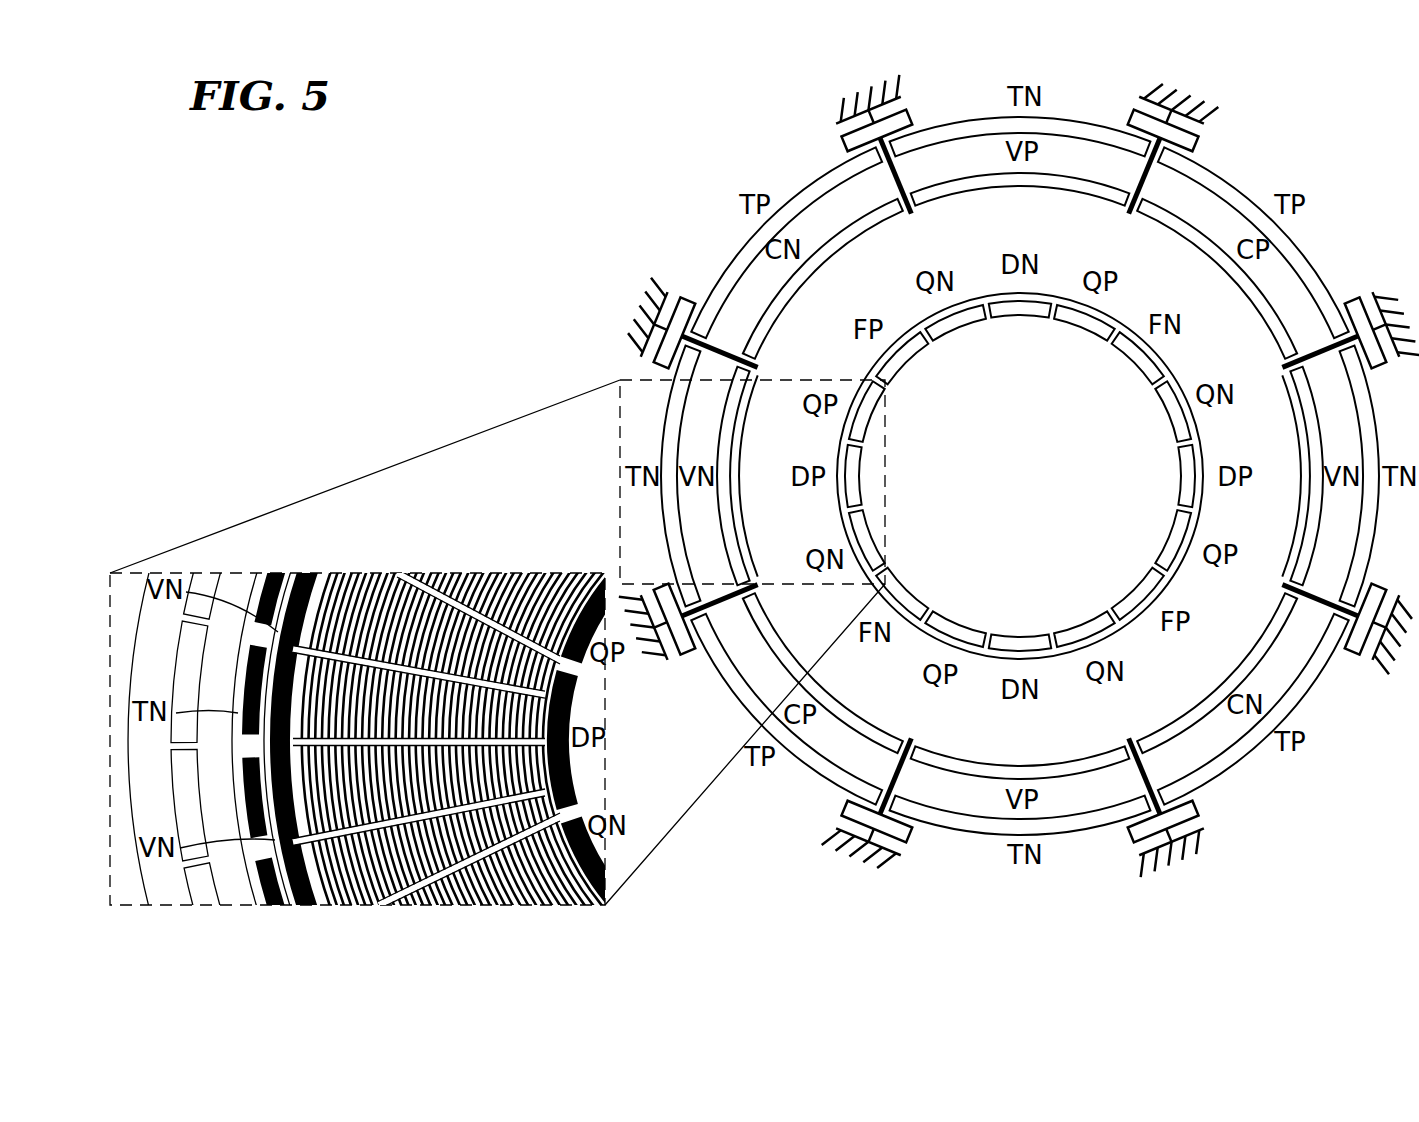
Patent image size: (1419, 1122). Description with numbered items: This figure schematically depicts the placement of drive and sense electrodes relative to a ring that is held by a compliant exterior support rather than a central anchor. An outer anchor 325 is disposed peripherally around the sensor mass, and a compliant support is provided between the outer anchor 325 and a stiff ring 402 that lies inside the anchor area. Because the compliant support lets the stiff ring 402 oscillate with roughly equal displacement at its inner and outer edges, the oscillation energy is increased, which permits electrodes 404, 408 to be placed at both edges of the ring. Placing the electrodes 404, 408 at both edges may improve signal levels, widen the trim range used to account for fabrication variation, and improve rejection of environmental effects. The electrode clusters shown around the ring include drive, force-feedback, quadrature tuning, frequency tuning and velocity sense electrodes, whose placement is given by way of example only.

The outer anchor 325 is at (165, 898).
The stiff ring 402 is at (276, 580).
The electrode 404 is at (256, 888).
The electrode 408 is at (311, 893).